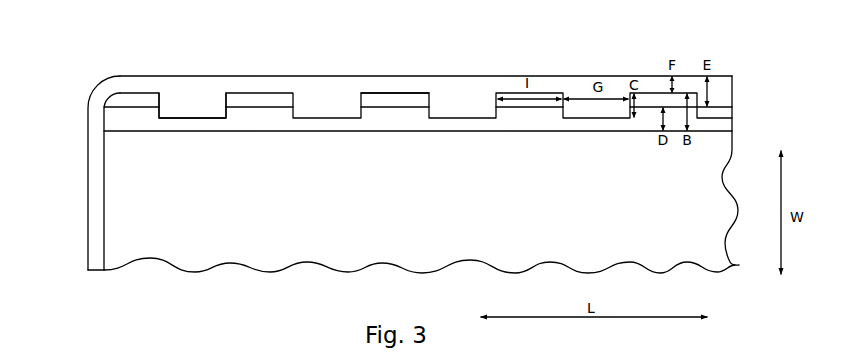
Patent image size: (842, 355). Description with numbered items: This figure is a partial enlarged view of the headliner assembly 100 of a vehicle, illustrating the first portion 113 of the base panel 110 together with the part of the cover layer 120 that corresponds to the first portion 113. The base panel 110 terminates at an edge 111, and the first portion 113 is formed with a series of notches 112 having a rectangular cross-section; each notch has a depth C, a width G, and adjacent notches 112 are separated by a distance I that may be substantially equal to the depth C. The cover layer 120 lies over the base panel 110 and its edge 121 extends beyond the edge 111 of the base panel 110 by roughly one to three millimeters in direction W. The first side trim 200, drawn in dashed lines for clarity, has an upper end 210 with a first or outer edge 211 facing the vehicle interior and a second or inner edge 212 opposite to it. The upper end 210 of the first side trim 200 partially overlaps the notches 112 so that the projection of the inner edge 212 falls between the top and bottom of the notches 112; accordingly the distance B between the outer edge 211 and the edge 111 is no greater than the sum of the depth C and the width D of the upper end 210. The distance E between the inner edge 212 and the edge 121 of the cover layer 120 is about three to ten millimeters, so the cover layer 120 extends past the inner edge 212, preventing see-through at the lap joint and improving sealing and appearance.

The headliner assembly 100 is at (95, 83).
The base panel 110 is at (116, 197).
The edge of the base panel 111 is at (393, 92).
The notches 112 is at (192, 105).
The first portion of the base panel 113 is at (310, 150).
The cover layer 120 is at (96, 241).
The edge of the cover layer 121 is at (277, 76).
The first side trim 200 is at (498, 135).
The upper end of the first side trim 210 is at (399, 124).
The first edge or outer edge 211 is at (147, 132).
The second edge or inner edge 212 is at (138, 106).